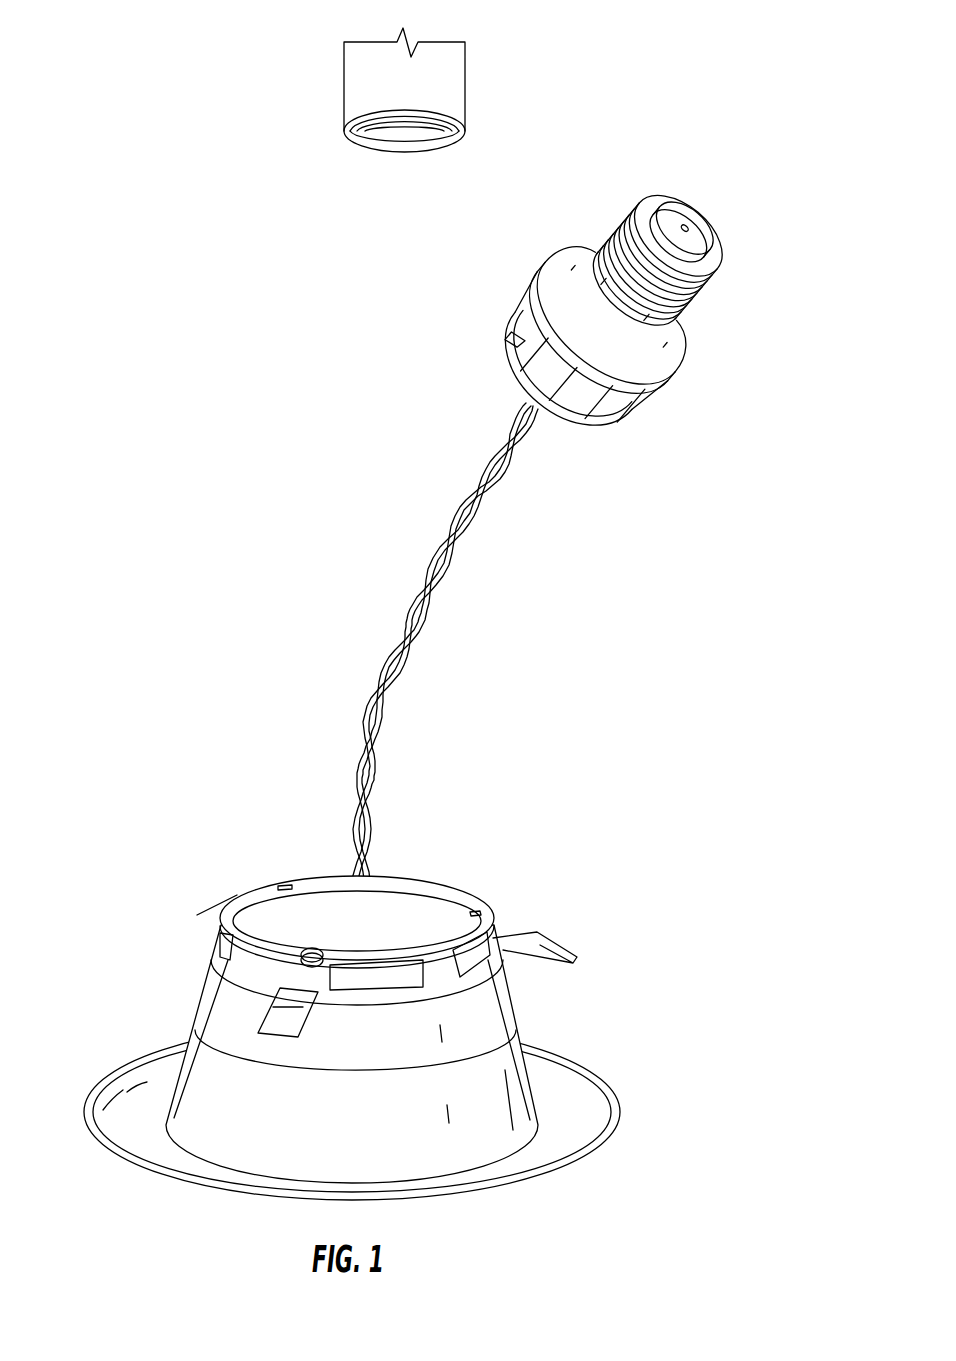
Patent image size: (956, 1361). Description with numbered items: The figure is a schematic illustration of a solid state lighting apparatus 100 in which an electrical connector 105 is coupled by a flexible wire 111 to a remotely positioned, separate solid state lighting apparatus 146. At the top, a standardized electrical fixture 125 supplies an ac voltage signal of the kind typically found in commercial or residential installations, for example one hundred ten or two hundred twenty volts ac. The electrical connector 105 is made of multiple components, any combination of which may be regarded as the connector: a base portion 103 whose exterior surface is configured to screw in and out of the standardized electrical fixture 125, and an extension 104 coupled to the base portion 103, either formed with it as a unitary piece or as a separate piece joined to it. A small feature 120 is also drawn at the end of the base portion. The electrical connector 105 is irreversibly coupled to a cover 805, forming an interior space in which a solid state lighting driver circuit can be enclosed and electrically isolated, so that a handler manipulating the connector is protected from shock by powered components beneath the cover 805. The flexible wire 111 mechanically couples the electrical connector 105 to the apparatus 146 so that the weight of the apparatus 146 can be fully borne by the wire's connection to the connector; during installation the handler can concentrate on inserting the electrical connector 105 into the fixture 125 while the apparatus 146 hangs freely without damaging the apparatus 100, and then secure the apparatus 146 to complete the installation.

The solid state lighting apparatus 100 is at (634, 111).
The standardized electrical fixture 125 is at (443, 80).
The extension 104 is at (549, 260).
The cover 805 is at (510, 348).
The electrical connector 105 is at (694, 257).
The base portion 103 is at (723, 288).
The electrical contact 120 is at (690, 227).
The flexible wire 111 is at (420, 588).
The solid state lighting apparatus 146 is at (575, 850).